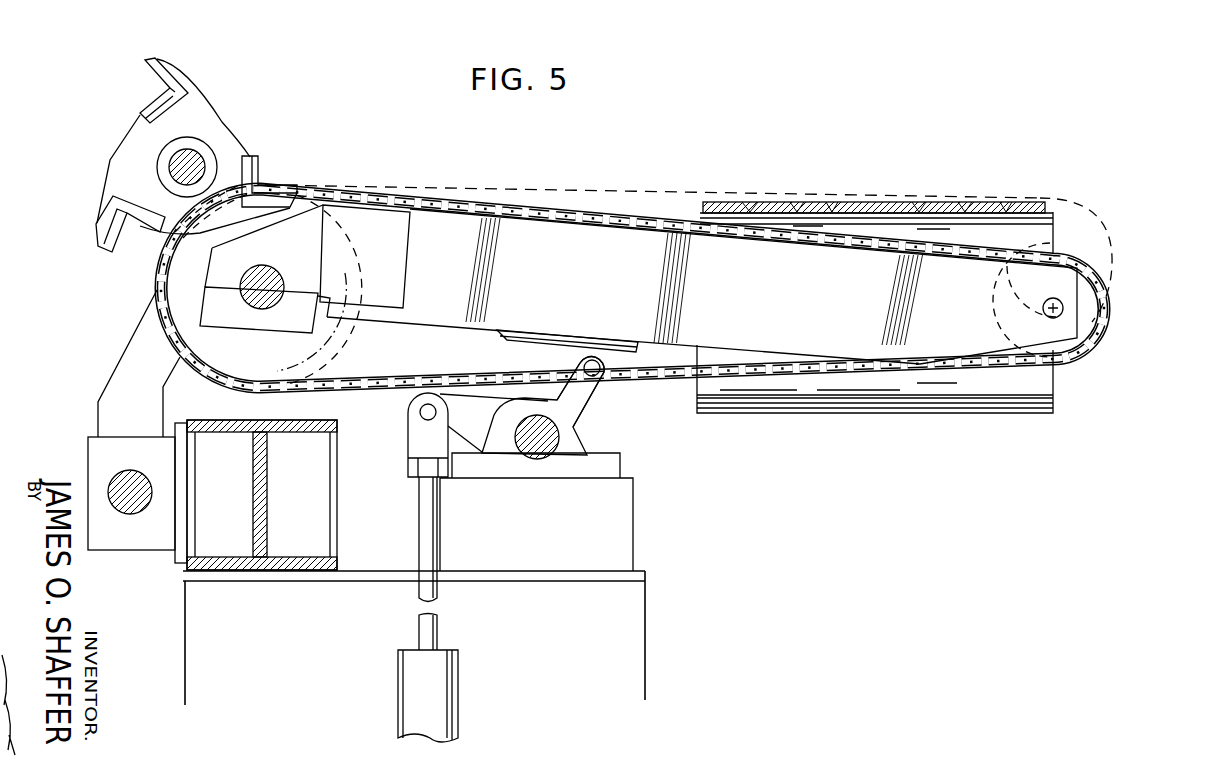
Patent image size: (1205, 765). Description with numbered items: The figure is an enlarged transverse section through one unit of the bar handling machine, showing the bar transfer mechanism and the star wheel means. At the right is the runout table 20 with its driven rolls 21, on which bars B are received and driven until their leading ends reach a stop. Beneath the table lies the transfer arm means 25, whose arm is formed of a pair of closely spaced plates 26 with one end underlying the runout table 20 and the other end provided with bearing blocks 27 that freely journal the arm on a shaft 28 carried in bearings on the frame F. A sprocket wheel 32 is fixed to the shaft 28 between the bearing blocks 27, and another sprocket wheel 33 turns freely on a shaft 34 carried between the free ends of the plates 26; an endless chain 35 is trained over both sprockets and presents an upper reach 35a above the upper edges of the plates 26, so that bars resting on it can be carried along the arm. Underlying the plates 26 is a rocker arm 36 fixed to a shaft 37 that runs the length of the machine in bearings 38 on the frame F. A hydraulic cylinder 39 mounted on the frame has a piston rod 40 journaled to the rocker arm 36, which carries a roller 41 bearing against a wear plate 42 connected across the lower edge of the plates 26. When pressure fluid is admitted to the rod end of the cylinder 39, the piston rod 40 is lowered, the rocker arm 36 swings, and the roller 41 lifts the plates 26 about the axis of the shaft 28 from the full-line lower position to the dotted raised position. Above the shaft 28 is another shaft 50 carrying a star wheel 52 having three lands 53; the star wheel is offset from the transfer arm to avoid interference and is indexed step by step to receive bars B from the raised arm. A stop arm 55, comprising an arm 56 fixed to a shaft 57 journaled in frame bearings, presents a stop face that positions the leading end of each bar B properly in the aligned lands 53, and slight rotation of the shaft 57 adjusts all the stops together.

The runout table 20 is at (1035, 424).
The driven rolls 21 is at (952, 393).
The transfer arm means 25 is at (790, 306).
The plates 26 is at (848, 336).
The bearing blocks 27 is at (392, 253).
The shaft 28 is at (275, 272).
The sprocket wheel 32 is at (220, 350).
The sprocket wheel 33 is at (1088, 324).
The shaft 34 is at (1062, 306).
The endless chain 35 is at (684, 382).
The upper reach 35a is at (641, 215).
The rocker arm 36 is at (472, 438).
The shaft 37 is at (560, 438).
The bearings 38 is at (628, 467).
The hydraulic cylinder 39 is at (410, 695).
The piston rod 40 is at (418, 594).
The roller 41 is at (622, 378).
The wear plate 42 is at (522, 336).
The shaft 50 is at (172, 167).
The star wheel 52 is at (223, 125).
The lands 53 is at (152, 90).
The stop arm 55 is at (113, 354).
The arm 56 is at (118, 380).
The shaft 57 is at (135, 504).
The bars B is at (1000, 203).
The frame F is at (660, 608).